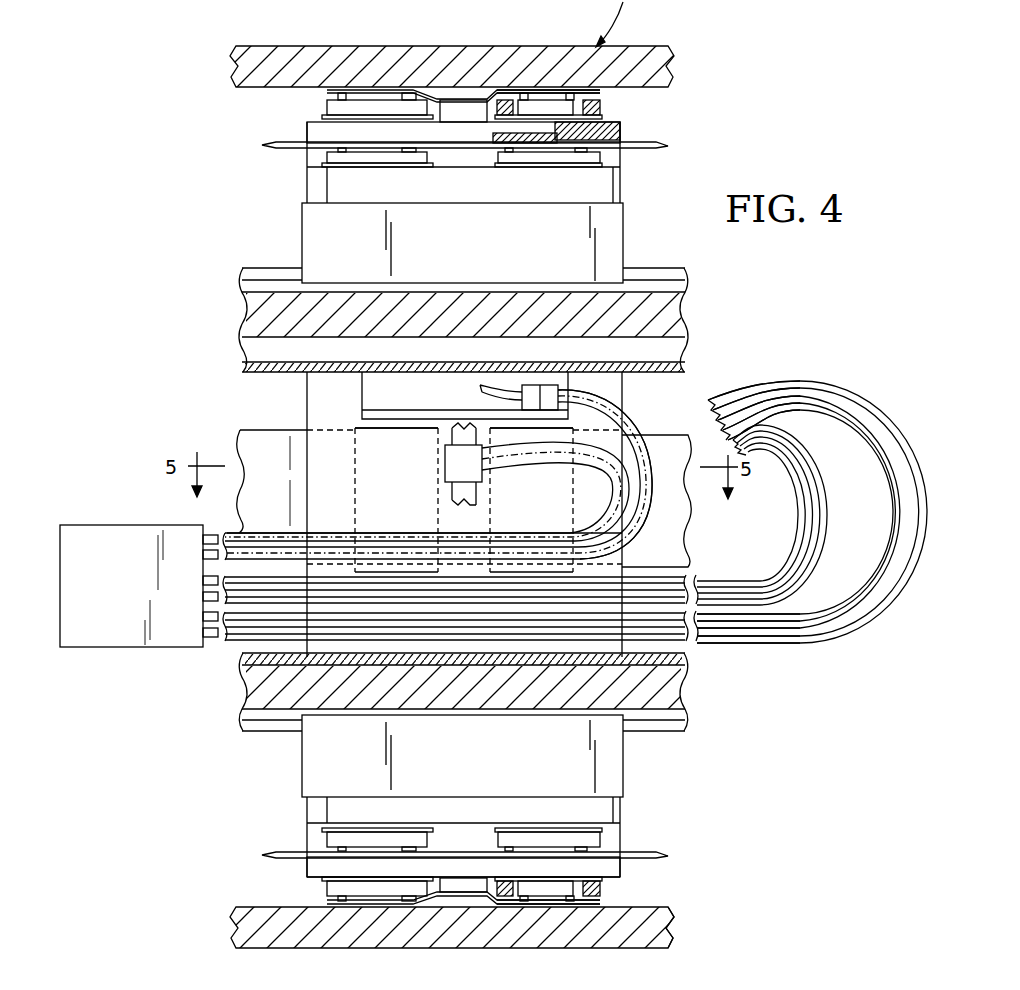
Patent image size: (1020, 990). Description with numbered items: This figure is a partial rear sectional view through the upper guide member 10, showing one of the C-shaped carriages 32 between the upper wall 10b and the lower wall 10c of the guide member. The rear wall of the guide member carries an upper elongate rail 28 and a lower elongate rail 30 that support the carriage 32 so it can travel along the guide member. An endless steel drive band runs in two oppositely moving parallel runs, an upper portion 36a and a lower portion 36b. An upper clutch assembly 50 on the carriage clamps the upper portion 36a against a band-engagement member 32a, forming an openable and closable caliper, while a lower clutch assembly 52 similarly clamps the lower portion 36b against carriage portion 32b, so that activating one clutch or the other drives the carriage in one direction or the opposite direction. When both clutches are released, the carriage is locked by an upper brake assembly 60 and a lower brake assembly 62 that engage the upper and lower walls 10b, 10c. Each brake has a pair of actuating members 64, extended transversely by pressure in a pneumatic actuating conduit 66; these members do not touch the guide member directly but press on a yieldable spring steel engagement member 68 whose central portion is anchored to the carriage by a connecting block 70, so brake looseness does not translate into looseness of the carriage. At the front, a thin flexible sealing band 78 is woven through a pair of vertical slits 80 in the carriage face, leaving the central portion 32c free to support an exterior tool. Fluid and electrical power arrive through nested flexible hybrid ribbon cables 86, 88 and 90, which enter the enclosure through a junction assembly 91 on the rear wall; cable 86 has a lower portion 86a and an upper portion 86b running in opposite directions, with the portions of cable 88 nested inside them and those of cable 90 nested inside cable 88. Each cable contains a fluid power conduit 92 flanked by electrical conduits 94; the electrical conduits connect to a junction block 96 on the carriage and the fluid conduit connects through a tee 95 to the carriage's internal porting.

The upper guide member 10 is at (676, 927).
The upper wall 10b is at (445, 47).
The lower wall 10c is at (433, 950).
The upper elongate rail 28 is at (686, 325).
The lower elongate rail 30 is at (687, 697).
The carriage 32 is at (475, 254).
The band-engagement member 32a is at (307, 130).
The carriage portion 32b is at (308, 865).
The central portion of the carriage front face 32c is at (482, 528).
The upper portion of the band 36a is at (645, 145).
The lower portion of the band 36b is at (655, 856).
The upper clutch assembly 50 is at (373, 150).
The lower clutch assembly 52 is at (385, 847).
The upper brake assembly 60 is at (327, 108).
The lower brake assembly 62 is at (327, 888).
The actuating member 64 is at (367, 100).
The pneumatic actuating conduit 66 is at (558, 142).
The engagement member 68 is at (598, 91).
The connecting block 70 is at (460, 108).
The sealing band 78 is at (288, 430).
The vertical slit 80 is at (355, 513).
The flexible hybrid ribbon cable 86 is at (902, 433).
The lower portion of cable 86a is at (793, 643).
The upper portion of cable 86b is at (800, 380).
The flexible hybrid ribbon cable 88 is at (773, 564).
The flexible hybrid ribbon cable 90 is at (649, 504).
The junction assembly 91 is at (125, 525).
The fluid power conduit 92 is at (547, 474).
The electrical conduits 94 is at (567, 395).
The tee 95 is at (445, 470).
The junction block 96 is at (553, 386).